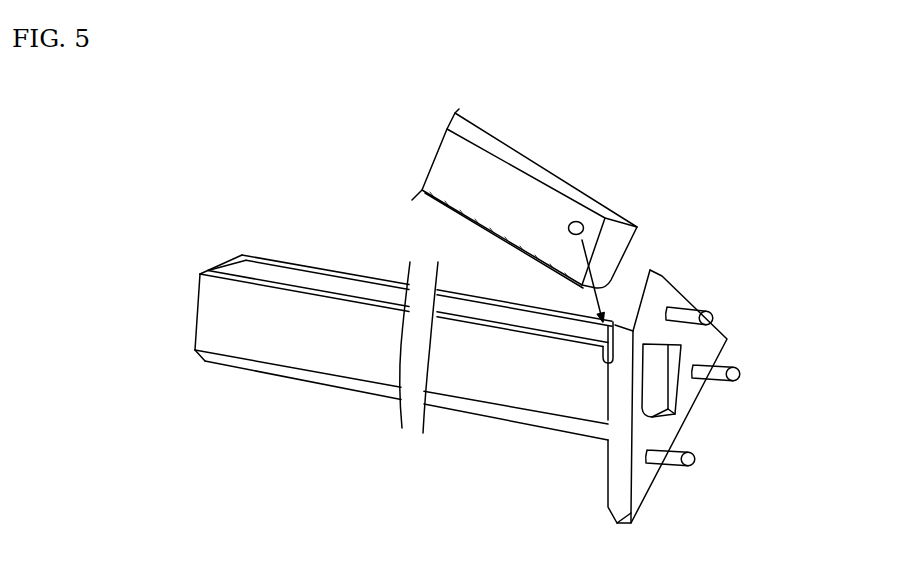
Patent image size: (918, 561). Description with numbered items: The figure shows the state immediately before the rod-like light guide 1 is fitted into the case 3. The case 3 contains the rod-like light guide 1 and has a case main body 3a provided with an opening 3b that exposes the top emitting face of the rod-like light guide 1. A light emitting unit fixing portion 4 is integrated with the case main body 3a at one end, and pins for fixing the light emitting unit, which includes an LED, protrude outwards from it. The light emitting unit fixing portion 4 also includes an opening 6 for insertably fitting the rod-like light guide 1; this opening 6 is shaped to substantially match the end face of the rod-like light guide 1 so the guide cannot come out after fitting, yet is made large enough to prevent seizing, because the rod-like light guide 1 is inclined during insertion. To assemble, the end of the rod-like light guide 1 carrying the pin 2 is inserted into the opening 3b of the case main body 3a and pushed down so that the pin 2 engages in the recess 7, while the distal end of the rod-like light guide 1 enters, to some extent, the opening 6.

The rod-like light guide 1 is at (513, 178).
The pin 2 is at (575, 222).
The case 3 is at (487, 428).
The case main body 3a is at (328, 353).
The opening 3b is at (337, 293).
The light emitting unit fixing portion 4 is at (687, 403).
The opening 6 is at (676, 369).
The recess 7 is at (602, 360).